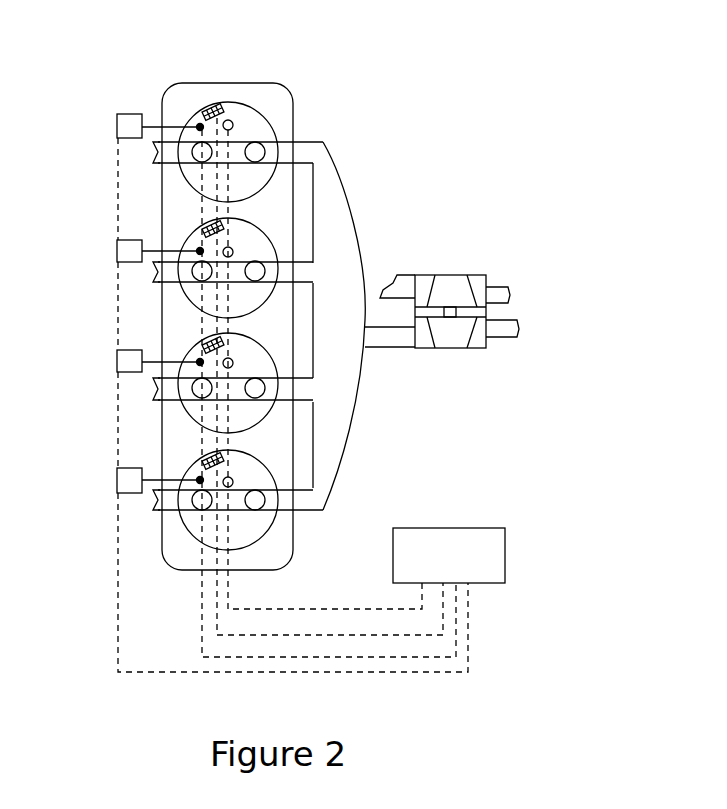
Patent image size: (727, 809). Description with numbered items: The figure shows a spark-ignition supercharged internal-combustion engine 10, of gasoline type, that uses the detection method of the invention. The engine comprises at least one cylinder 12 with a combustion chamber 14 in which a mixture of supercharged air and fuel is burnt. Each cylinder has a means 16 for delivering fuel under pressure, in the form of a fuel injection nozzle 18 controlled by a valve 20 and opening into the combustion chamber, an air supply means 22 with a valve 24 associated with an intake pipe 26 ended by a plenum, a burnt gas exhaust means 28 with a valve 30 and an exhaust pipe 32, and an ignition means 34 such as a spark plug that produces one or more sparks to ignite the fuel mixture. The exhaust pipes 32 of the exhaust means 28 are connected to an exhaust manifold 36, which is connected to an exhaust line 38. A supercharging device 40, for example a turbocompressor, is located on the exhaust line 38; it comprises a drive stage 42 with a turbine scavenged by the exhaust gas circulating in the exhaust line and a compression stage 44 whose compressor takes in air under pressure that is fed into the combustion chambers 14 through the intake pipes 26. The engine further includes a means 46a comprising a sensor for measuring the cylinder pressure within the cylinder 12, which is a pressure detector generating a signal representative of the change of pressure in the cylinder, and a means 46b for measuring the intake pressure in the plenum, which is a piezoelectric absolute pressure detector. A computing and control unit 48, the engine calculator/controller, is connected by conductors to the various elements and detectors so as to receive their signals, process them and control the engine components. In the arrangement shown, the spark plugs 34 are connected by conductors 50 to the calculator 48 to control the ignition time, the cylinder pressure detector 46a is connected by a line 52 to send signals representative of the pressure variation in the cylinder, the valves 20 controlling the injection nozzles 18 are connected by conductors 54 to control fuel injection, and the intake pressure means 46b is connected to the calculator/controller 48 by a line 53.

The spark-ignition supercharged internal-combustion engine 10 is at (339, 326).
The cylinder 12 is at (272, 120).
The combustion chamber 14 is at (232, 191).
The means for delivering fuel under pressure 16 is at (102, 272).
The fuel injection nozzle 18 is at (178, 125).
The valve 20 is at (131, 366).
The air supply means 22 is at (173, 512).
The valve 24 is at (203, 396).
The intake pipe 26 is at (200, 282).
The burnt gas exhaust means 28 is at (285, 512).
The valve 30 is at (256, 279).
The exhaust pipe 32 is at (278, 400).
The ignition means 34 is at (233, 121).
The exhaust manifold 36 is at (327, 341).
The exhaust line 38 is at (528, 332).
The supercharging device 40 is at (478, 279).
The drive stage 42 is at (440, 343).
The compression stage 44 is at (440, 303).
The means for measuring the cylinder pressure 46a is at (207, 116).
The means for measuring the intake pressure 46b is at (200, 145).
The computing and control unit 48 is at (437, 566).
The conductors 50 is at (362, 609).
The line 52 is at (284, 636).
The line 53 is at (341, 674).
The conductors 54 is at (117, 594).